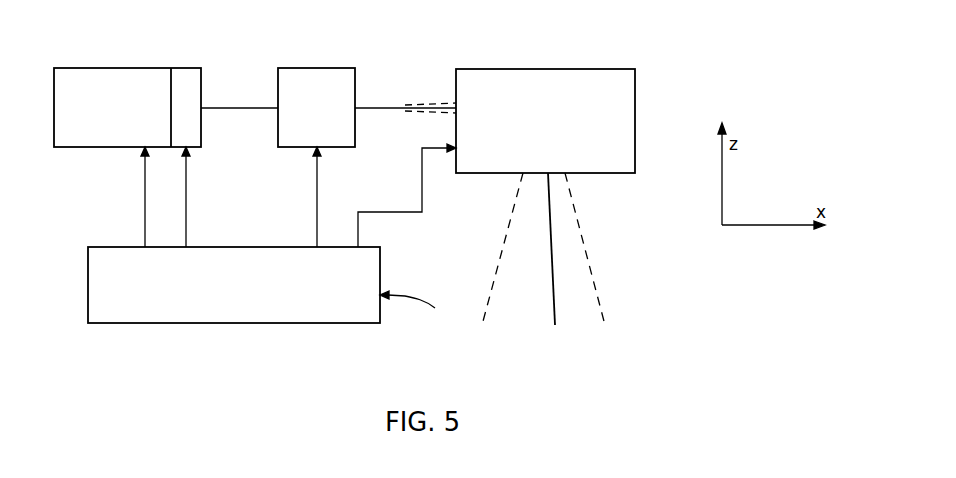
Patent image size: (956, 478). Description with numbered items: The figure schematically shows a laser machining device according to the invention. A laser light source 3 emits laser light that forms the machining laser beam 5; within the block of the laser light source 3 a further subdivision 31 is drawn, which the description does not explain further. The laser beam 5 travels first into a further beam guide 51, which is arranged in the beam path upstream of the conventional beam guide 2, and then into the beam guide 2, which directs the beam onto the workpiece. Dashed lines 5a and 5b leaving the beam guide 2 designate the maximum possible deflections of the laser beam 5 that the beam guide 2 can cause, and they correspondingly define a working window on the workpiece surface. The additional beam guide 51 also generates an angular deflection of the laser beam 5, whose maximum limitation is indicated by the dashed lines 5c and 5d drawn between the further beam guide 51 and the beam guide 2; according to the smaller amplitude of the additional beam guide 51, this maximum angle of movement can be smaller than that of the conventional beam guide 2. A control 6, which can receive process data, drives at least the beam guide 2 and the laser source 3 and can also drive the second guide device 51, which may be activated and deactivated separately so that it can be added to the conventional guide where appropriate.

The beam guide 2 is at (503, 80).
The laser light source 3 is at (115, 76).
The light source module 31 is at (187, 78).
The machining laser beam 5 is at (230, 105).
The further beam guide 51 is at (313, 77).
The maximum possible deflection of the laser beam 5a is at (590, 260).
The maximum possible deflection of the laser beam 5b is at (505, 237).
The maximum limitation of angular deflection 5c is at (420, 113).
The maximum limitation of angular deflection 5d is at (427, 101).
The control 6 is at (100, 297).